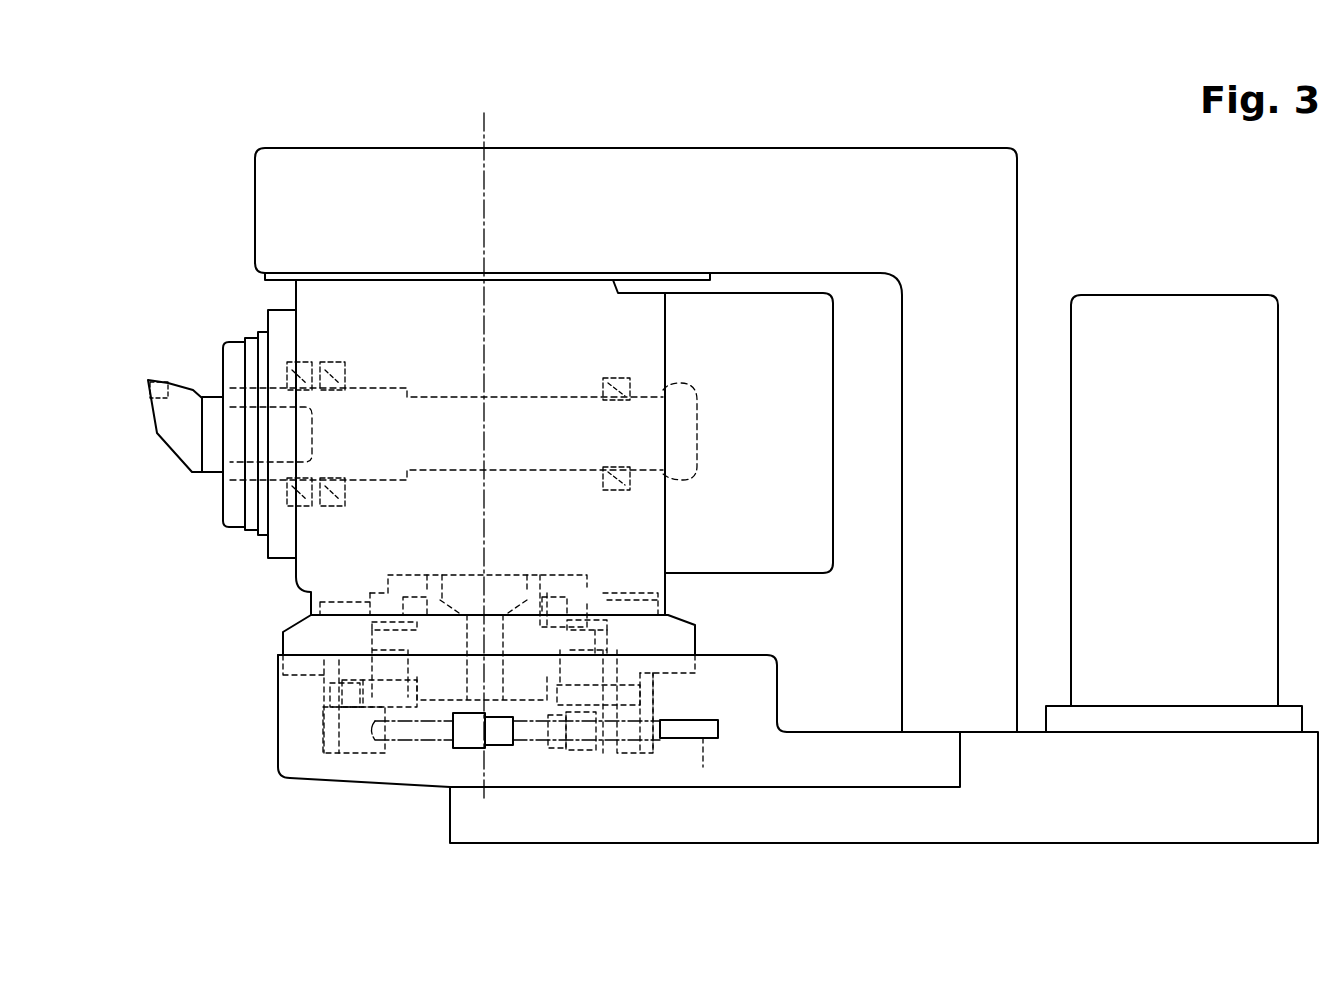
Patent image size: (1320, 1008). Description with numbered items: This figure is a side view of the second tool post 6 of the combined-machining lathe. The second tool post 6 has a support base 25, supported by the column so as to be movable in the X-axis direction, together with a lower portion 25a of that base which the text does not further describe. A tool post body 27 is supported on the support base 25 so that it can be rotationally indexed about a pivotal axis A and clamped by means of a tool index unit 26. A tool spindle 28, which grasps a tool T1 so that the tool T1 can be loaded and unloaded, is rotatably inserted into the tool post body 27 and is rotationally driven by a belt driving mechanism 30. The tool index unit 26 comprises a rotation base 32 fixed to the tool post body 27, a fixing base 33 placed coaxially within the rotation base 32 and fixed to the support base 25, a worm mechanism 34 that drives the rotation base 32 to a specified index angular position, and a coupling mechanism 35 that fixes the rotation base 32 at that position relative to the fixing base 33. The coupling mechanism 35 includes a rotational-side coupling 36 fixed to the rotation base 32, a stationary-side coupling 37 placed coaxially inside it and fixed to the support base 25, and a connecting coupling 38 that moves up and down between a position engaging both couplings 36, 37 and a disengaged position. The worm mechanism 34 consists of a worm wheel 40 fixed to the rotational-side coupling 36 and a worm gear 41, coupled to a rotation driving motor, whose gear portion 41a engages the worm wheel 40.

The second tool post 6 is at (205, 153).
The pivotal axis A is at (483, 133).
The support base 25 is at (276, 717).
The bottom surface of base 25a is at (355, 752).
The tool index unit 26 is at (331, 647).
The tool post body 27 is at (285, 568).
The tool spindle 28 is at (240, 505).
The belt driving mechanism 30 is at (622, 357).
The rotation base 32 is at (657, 591).
The fixing base 33 is at (582, 589).
The worm mechanism 34 is at (571, 790).
The coupling mechanism 35 is at (595, 789).
The rotational-side coupling 36 is at (574, 742).
The stationary-side coupling 37 is at (560, 740).
The connecting coupling 38 is at (567, 655).
The worm wheel 40 is at (660, 748).
The worm gear 41 is at (705, 748).
The gear portion 41a is at (464, 752).
The tool T1 is at (175, 462).